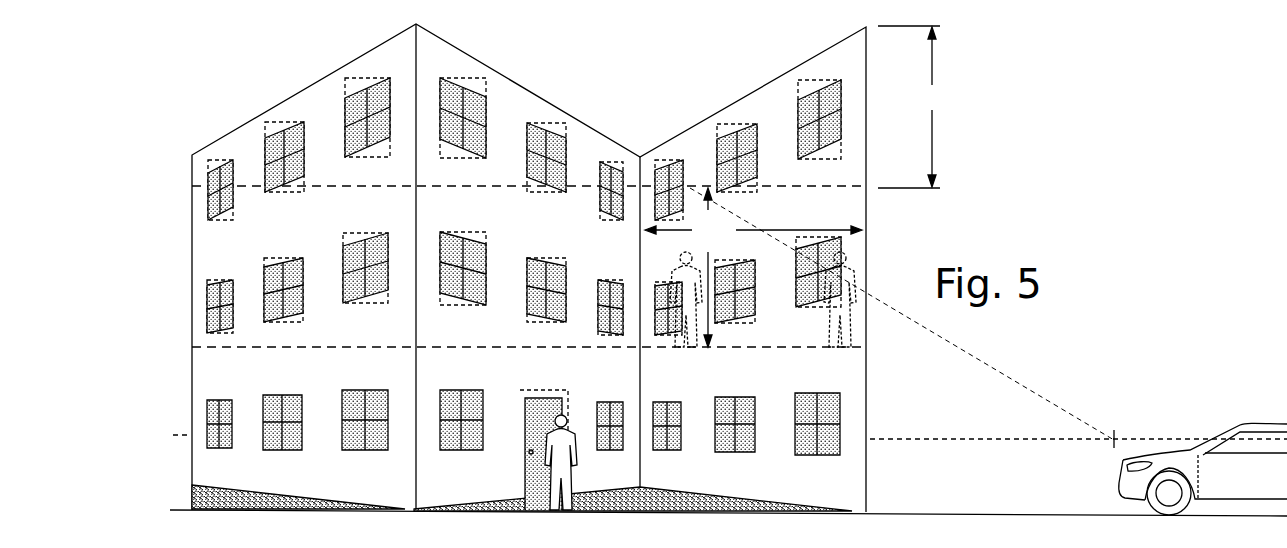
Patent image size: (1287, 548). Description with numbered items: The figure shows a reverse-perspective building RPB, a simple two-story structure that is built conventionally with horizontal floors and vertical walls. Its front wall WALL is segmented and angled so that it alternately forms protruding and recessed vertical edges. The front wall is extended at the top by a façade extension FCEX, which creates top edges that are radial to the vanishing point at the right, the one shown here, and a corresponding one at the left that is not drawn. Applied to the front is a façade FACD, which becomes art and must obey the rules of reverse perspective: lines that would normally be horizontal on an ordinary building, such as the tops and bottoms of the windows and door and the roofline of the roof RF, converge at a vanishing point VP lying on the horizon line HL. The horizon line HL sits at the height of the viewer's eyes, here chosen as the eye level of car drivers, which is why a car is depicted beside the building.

The reverse-perspective building RPB is at (253, 97).
The façade FACD is at (402, 47).
The wall WALL is at (605, 148).
The façade extension FCEX is at (917, 107).
The roof RF is at (849, 186).
The horizon line HL is at (1048, 438).
The vanishing point VP is at (1108, 430).